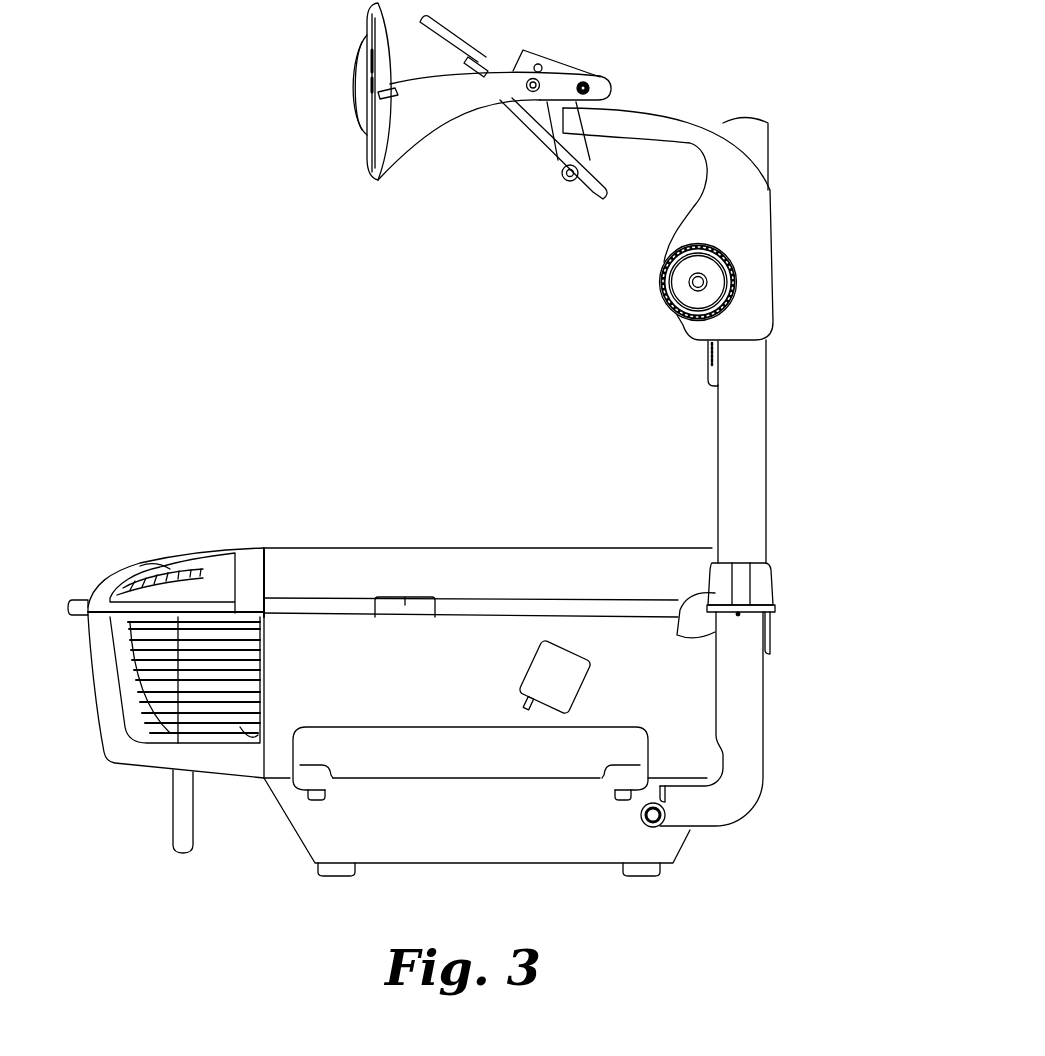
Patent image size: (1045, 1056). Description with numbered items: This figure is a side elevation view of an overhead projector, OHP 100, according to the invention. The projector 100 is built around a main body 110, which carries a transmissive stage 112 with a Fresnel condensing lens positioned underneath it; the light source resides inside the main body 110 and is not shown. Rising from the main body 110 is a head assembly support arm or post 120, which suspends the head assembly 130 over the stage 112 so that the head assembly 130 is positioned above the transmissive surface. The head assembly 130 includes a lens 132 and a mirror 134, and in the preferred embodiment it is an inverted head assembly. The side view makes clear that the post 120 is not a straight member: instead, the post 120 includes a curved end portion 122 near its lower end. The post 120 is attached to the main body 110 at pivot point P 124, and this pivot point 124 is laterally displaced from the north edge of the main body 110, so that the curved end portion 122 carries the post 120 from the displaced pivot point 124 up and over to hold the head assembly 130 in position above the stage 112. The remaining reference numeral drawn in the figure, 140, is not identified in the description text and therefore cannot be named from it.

The overhead projector 100 is at (795, 80).
The main body 110 is at (308, 712).
The transmissive stage 112 is at (450, 548).
The head assembly support arm or post 120 is at (757, 453).
The curved end portion 122 is at (740, 798).
The pivot point P 124 is at (658, 827).
The head assembly 130 is at (555, 40).
The lens 132 is at (352, 70).
The mirror 134 is at (525, 135).
The hood 140 is at (446, 110).